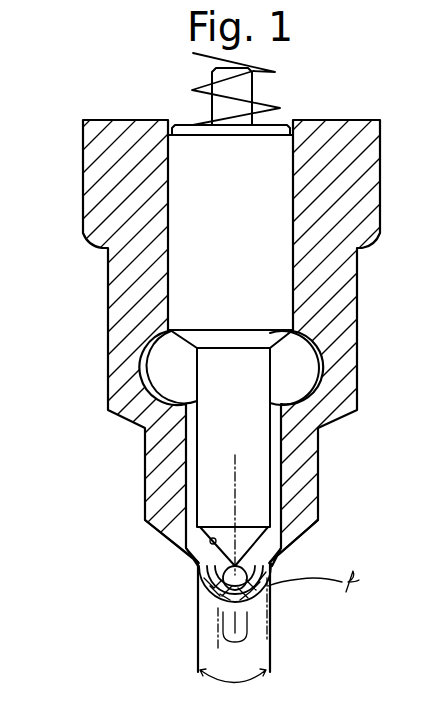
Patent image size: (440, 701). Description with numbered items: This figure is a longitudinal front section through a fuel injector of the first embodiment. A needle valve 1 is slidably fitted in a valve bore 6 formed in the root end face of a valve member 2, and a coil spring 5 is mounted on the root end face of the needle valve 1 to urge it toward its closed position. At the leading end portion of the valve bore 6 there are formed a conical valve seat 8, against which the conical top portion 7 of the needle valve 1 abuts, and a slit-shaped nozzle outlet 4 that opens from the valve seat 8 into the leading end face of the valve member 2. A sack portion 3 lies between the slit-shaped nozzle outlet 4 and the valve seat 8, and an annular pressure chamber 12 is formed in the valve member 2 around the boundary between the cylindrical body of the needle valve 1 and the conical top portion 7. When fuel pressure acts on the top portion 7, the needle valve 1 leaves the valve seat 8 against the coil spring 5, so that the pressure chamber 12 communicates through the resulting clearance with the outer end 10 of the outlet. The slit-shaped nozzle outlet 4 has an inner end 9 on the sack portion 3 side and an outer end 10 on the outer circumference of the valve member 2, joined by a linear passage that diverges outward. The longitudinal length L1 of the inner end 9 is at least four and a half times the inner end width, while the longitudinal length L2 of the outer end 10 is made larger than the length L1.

The needle valve 1 is at (243, 394).
The valve member 2 is at (300, 473).
The sack portion 3 is at (262, 558).
The slit-shaped nozzle outlet 4 is at (240, 612).
The coil spring 5 is at (258, 78).
The valve bore 6 is at (292, 270).
The conical top portion 7 is at (300, 548).
The conical valve seat 8 is at (196, 556).
The inner end 9 is at (192, 573).
The outer end 10 is at (240, 612).
The annular pressure chamber 12 is at (158, 375).
The length of the inner end L1 is at (255, 652).
The length of the outer end L2 is at (240, 660).